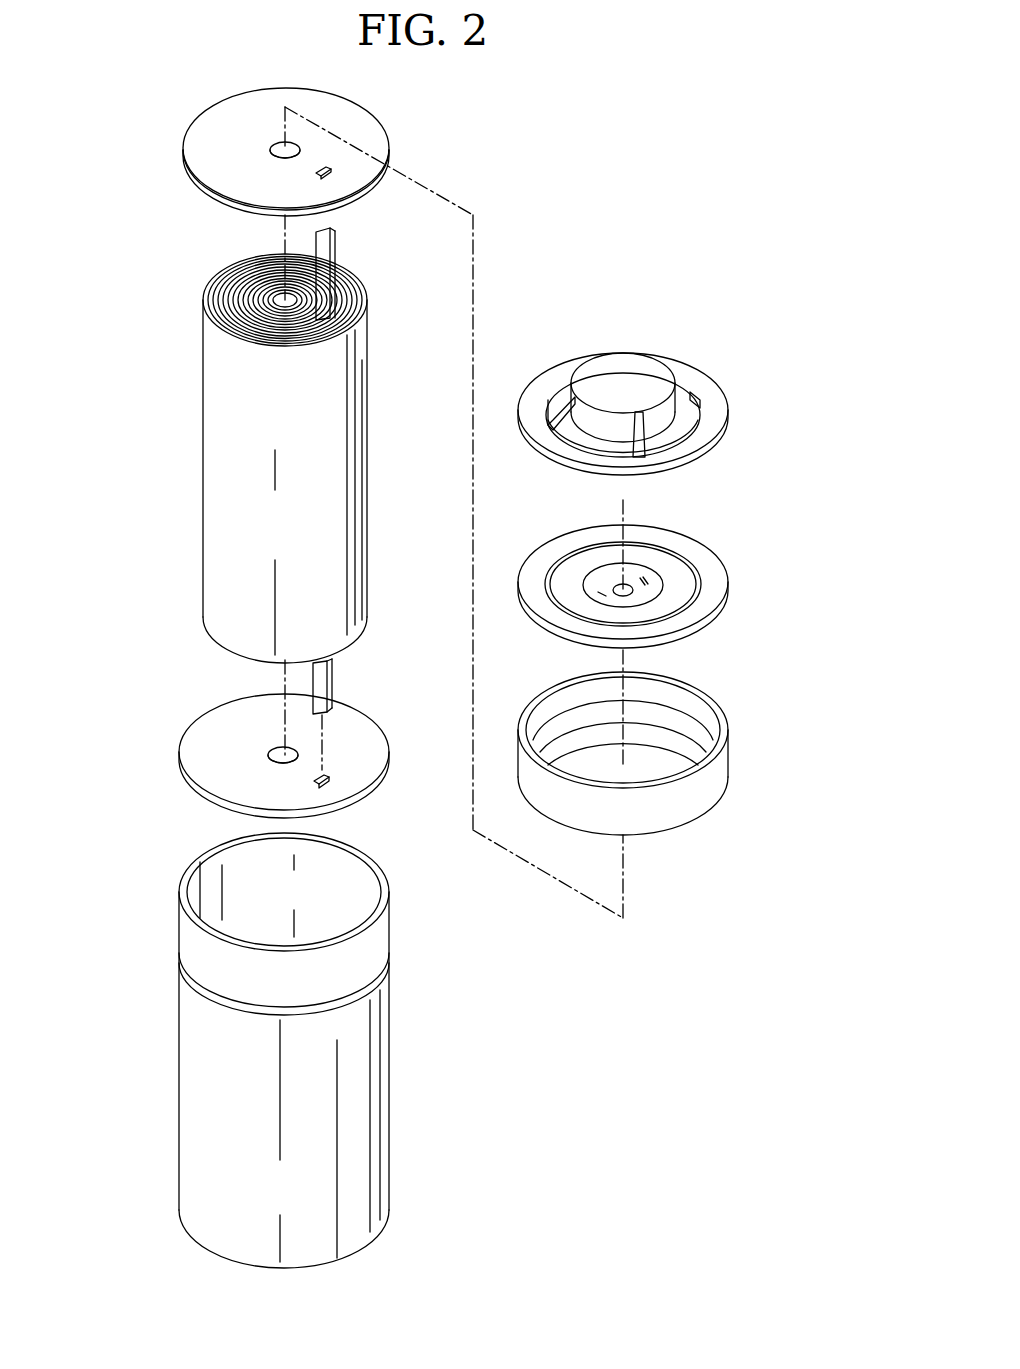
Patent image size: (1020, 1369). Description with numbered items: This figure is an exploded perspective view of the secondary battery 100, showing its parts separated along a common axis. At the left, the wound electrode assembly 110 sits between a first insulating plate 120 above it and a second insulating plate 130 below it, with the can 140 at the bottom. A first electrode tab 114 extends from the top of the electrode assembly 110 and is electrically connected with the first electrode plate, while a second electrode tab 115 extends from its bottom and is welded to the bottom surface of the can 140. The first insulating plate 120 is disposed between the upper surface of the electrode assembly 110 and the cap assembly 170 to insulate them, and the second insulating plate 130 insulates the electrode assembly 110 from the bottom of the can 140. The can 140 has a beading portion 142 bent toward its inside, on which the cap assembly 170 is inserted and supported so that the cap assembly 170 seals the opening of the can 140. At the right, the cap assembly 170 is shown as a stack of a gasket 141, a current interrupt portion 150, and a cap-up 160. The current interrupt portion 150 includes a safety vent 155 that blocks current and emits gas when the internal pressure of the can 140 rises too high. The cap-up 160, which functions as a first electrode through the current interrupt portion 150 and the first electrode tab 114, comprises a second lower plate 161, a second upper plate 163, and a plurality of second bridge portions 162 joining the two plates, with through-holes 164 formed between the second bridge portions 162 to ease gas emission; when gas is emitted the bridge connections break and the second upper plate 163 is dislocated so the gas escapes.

The secondary battery 100 is at (622, 147).
The electrode assembly 110 is at (204, 465).
The first electrode tab 114 is at (332, 248).
The second electrode tab 115 is at (330, 686).
The first insulating plate 120 is at (200, 135).
The second insulating plate 130 is at (192, 745).
The can 140 is at (186, 1102).
The gasket 141 is at (718, 773).
The beading portion 142 is at (183, 968).
The current interrupt portion 150 is at (659, 577).
The safety vent 155 is at (660, 577).
The cap-up 160 is at (653, 389).
The second lower plate 161 is at (700, 388).
The second bridge portions 162 is at (563, 405).
The second upper plate 163 is at (645, 367).
The through-holes 164 is at (680, 412).
The cap assembly 170 is at (798, 465).